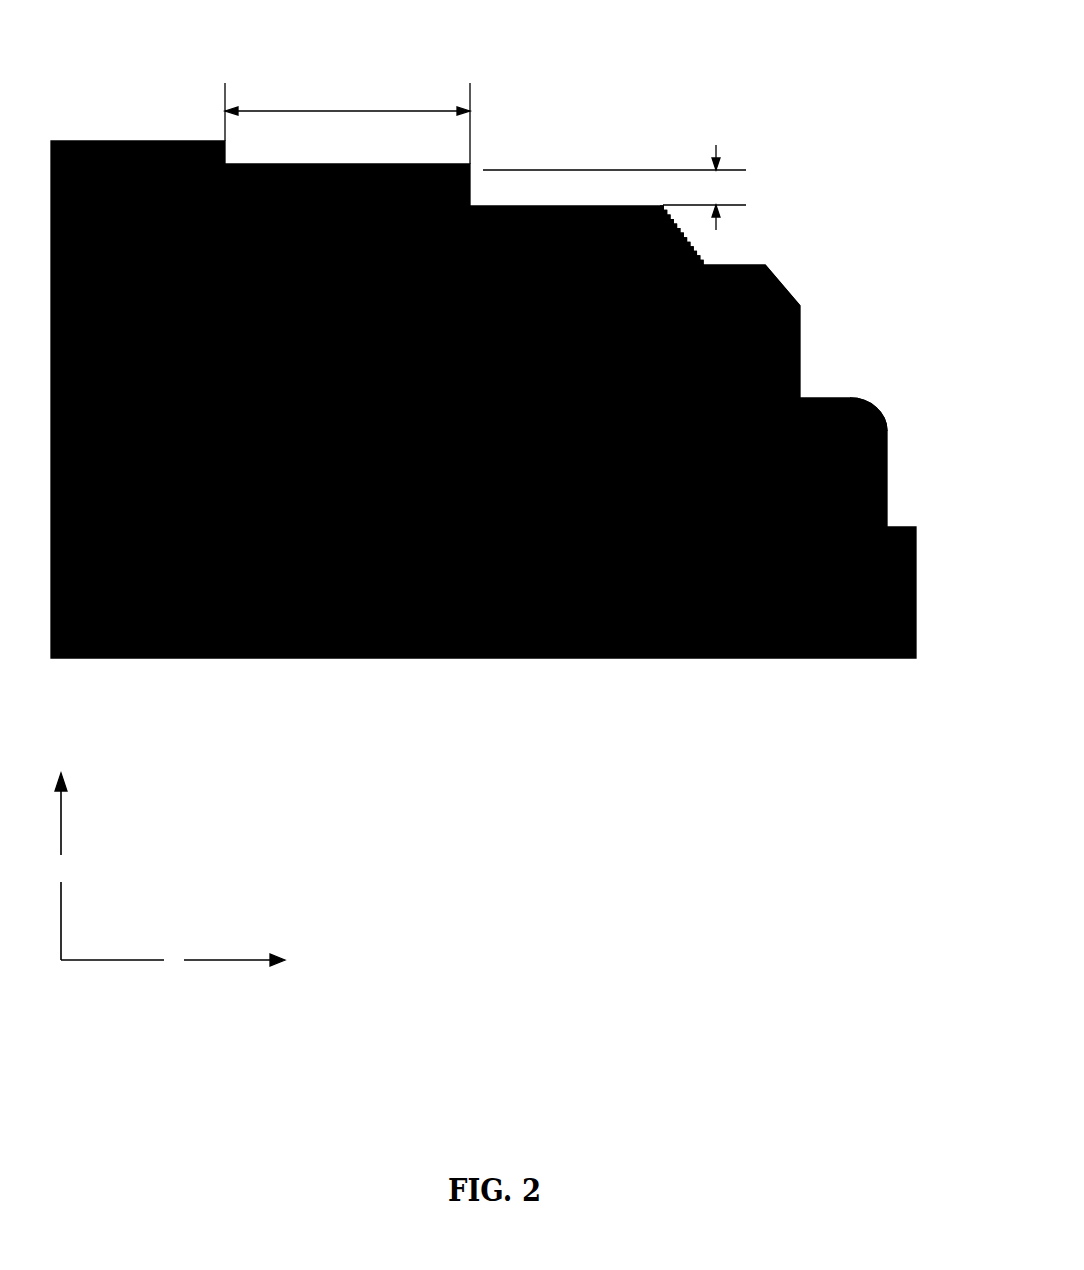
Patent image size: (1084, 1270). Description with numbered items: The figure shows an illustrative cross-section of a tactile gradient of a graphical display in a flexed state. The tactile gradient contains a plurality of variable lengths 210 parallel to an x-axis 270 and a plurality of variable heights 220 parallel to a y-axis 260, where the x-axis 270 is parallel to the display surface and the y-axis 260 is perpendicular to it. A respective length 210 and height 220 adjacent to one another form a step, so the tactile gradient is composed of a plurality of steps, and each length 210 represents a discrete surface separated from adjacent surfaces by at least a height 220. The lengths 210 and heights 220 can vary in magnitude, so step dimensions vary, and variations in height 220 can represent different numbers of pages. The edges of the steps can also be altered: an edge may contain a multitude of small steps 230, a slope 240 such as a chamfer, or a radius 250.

The variable length 210 is at (350, 74).
The variable height 220 is at (726, 136).
The small steps 230 is at (707, 246).
The slope 240 is at (790, 270).
The radius 250 is at (870, 378).
The y-axis 260 is at (71, 836).
The x-axis 270 is at (178, 922).